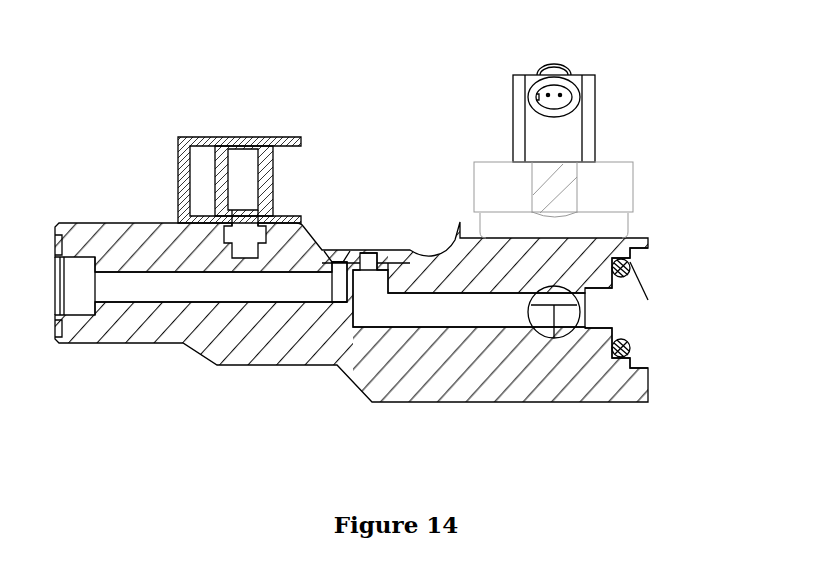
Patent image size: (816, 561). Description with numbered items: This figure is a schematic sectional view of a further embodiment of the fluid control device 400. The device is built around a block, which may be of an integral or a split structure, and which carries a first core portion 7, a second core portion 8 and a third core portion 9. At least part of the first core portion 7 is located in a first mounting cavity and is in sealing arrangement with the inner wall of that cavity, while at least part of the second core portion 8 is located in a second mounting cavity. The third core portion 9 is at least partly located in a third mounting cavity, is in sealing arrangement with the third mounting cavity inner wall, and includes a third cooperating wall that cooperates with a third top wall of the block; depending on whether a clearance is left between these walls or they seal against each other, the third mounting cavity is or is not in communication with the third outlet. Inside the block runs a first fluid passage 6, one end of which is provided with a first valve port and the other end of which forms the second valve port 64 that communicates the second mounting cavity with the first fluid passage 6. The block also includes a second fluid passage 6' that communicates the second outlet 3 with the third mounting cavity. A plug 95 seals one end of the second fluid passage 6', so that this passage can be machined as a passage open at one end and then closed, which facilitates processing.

The fluid control device 400 is at (396, 228).
The second outlet 3 is at (383, 299).
The first fluid passage 6 is at (210, 328).
The second fluid passage 6' is at (469, 362).
The second valve port 64 is at (333, 287).
The first core portion 7 is at (232, 145).
The second core portion 8 is at (358, 249).
The third core portion 9 is at (583, 127).
The plug 95 is at (628, 310).